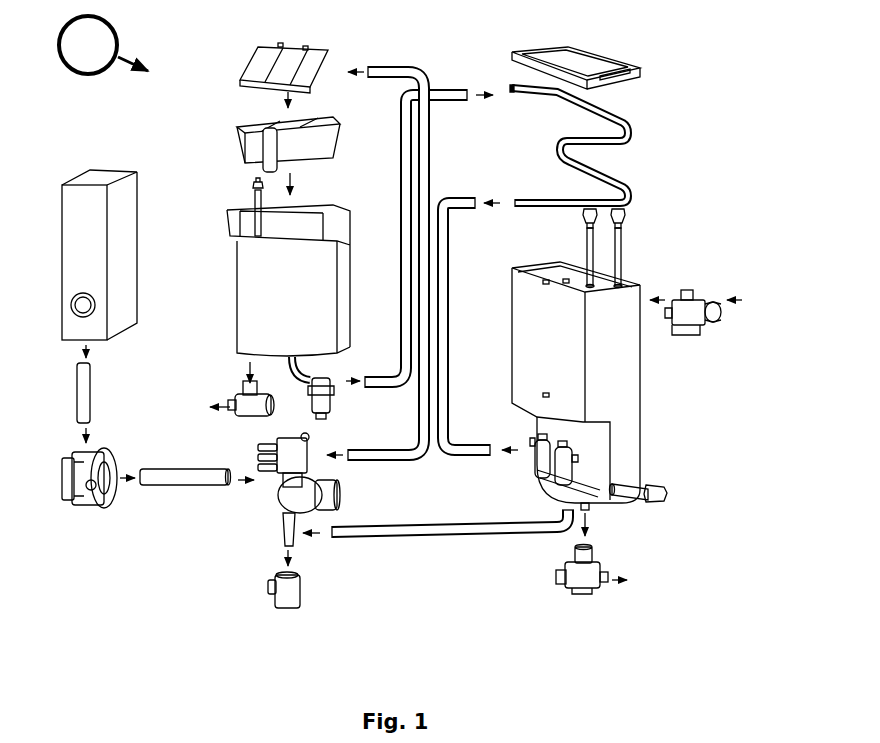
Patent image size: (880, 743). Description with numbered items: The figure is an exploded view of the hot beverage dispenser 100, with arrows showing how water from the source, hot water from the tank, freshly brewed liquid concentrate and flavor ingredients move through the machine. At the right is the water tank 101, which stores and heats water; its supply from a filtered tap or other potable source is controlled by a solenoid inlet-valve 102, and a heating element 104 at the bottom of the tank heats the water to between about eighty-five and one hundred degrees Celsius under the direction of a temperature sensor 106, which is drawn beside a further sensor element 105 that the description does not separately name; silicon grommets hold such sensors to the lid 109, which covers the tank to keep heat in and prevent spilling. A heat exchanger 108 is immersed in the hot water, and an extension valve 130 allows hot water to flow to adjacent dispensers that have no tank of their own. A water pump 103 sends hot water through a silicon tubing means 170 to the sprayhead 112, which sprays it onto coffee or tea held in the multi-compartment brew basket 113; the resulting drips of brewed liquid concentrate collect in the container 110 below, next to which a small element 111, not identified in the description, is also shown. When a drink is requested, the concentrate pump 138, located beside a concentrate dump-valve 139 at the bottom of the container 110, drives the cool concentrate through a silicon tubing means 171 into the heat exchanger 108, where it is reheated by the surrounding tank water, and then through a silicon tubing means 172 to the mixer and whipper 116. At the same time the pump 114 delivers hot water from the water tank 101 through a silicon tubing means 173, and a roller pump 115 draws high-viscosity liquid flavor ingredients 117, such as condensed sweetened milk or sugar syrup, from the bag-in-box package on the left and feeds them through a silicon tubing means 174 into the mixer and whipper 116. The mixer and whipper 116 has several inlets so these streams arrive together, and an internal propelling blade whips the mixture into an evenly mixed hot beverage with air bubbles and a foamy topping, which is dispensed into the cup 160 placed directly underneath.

The beverage brewing system 100 is at (103, 45).
The water tank 101 is at (618, 405).
The solenoid inlet-valve 102 is at (690, 330).
The water pump 103 is at (540, 462).
The heating element 104 is at (660, 496).
The level probe 105 is at (594, 245).
The temperature sensor 106 is at (622, 256).
The heat exchanger 108 is at (628, 130).
The lid 109 is at (590, 65).
The container 110 is at (260, 312).
The level sensor tube 111 is at (250, 207).
The sprayhead 112 is at (255, 72).
The multi-compartment brew basket 113 is at (253, 141).
The pump 114 is at (550, 487).
The roller pump 115 is at (90, 503).
The mixer and whipper 116 is at (287, 457).
The liquid flavor ingredients 117 is at (125, 192).
The extension valve 130 is at (592, 556).
The concentrate pump 138 is at (330, 407).
The concentrate dump-valve 139 is at (239, 408).
The cup 160 is at (275, 593).
The silicon tubing means 170 is at (410, 70).
The silicon tubing means 171 is at (400, 173).
The silicon tubing means 172 is at (443, 270).
The silicon tubing means 173 is at (420, 535).
The silicon tubing means 174 is at (88, 400).